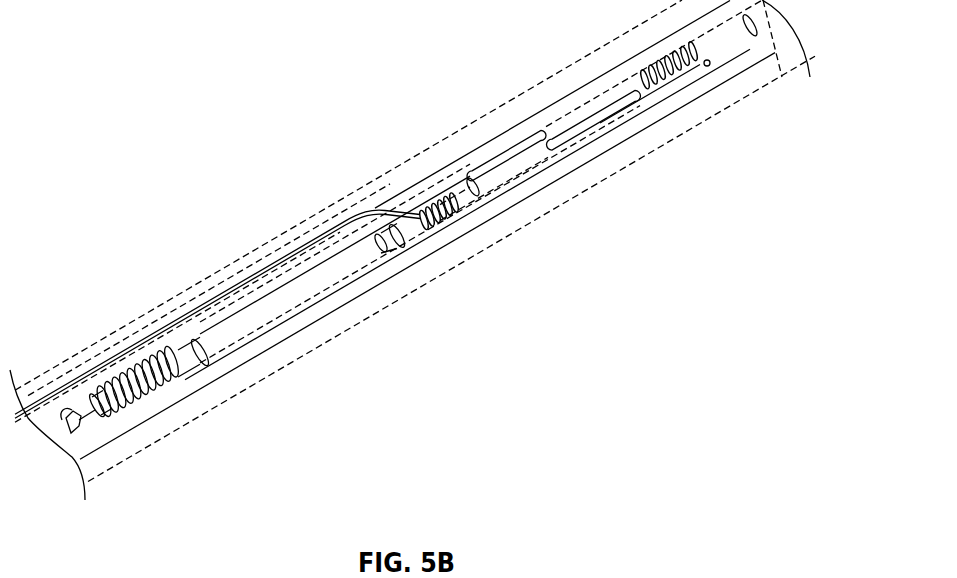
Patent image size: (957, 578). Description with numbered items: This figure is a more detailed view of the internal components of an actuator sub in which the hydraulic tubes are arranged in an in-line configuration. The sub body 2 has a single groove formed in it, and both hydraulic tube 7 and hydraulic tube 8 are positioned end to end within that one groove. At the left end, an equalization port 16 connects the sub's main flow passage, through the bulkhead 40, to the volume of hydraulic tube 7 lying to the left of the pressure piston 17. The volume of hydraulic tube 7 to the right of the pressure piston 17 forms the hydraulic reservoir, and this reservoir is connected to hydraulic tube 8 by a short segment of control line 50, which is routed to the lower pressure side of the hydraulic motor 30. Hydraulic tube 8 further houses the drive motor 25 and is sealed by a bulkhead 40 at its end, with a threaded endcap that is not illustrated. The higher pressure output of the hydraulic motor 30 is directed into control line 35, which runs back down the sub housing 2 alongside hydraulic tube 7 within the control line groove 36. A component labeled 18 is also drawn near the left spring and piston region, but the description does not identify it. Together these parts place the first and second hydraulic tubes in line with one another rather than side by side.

The sub body 2 is at (400, 150).
The hydraulic tube 7 is at (310, 303).
The hydraulic tube 8 is at (643, 100).
The equalization port 16 is at (80, 412).
The pressure piston 17 is at (193, 360).
The retaining ring 18 is at (150, 397).
The drive motor 25 is at (575, 125).
The hydraulic motor 30 is at (520, 177).
The control line 35 is at (200, 311).
The control line groove 36 is at (272, 258).
The bulkhead 40 is at (117, 400).
The control line 50 is at (413, 233).